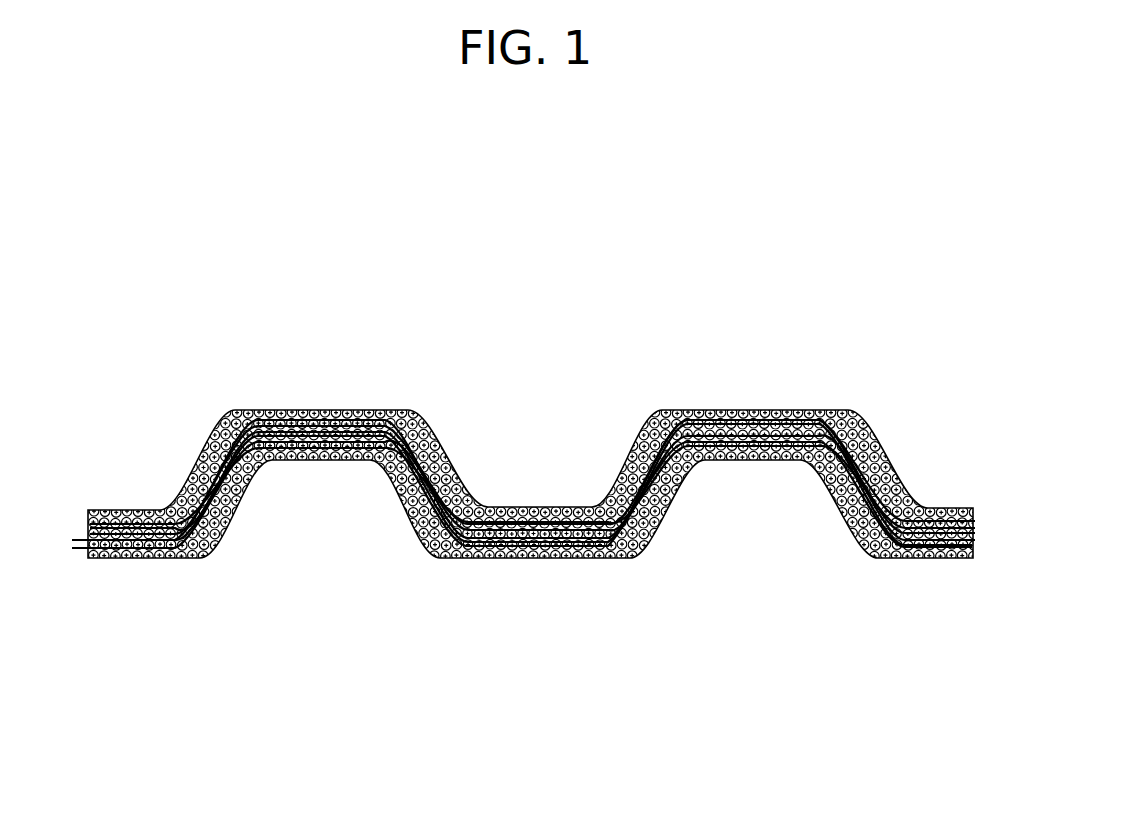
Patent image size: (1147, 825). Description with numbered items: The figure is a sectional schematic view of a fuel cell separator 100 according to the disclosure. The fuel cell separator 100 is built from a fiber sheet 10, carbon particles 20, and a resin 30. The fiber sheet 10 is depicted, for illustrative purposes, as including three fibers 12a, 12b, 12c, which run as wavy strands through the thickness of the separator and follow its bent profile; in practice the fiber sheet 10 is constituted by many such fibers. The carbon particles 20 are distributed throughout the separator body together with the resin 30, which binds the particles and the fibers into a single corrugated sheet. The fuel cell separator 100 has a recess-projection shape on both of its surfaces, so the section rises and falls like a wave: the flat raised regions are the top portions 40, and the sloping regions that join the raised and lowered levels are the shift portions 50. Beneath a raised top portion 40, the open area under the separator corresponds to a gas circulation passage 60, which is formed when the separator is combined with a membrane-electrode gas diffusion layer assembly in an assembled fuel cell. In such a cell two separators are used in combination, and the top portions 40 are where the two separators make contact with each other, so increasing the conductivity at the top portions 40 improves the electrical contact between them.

The fuel cell separator 100 is at (866, 252).
The fiber sheet 10 is at (640, 686).
The fiber 12a is at (467, 562).
The fiber 12b is at (566, 562).
The fiber 12c is at (577, 562).
The carbon particles 20 is at (218, 420).
The resin 30 is at (188, 452).
The top portion 40 is at (733, 408).
The shift portion 50 is at (688, 496).
The gas circulation passage 60 is at (773, 530).